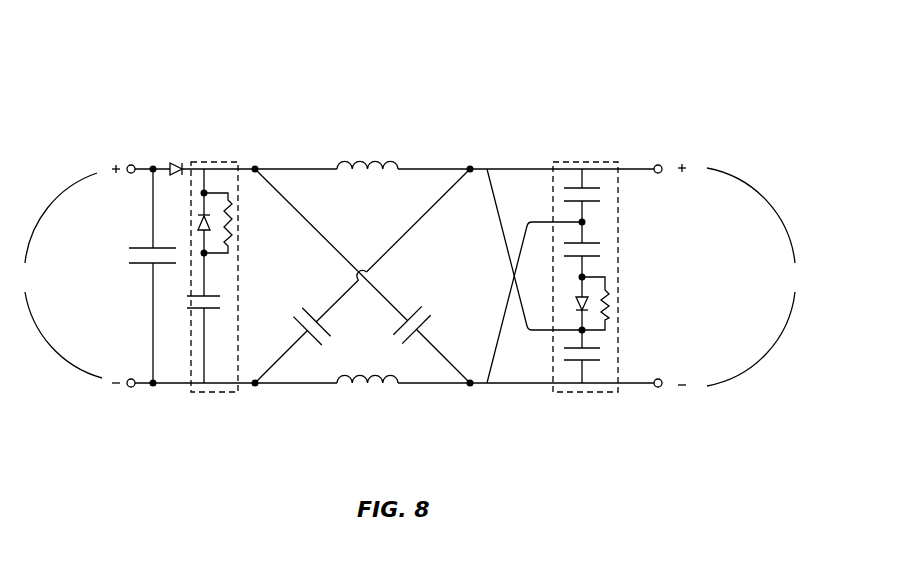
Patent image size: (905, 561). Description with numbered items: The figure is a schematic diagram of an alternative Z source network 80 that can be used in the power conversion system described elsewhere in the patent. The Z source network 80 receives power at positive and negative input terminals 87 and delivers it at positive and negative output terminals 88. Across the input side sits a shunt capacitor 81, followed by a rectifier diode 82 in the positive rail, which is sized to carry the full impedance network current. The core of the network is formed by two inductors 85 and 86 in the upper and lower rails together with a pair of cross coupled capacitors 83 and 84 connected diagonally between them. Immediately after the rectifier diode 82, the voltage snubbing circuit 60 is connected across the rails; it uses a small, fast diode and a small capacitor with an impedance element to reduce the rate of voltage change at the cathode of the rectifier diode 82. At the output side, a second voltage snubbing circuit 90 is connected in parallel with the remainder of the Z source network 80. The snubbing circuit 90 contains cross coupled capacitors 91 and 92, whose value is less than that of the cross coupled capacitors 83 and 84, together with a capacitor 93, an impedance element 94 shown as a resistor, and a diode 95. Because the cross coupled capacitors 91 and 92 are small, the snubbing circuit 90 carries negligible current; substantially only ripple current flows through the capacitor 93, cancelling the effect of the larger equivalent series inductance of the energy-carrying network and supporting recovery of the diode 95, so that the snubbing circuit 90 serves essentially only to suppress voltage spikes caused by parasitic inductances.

The Z source network 80 is at (578, 62).
The shunt capacitor 81 is at (143, 265).
The rectifier diode 82 is at (176, 158).
The voltage snubbing circuit 60 is at (222, 162).
The cross coupled capacitor 83 is at (291, 323).
The cross coupled capacitor 84 is at (436, 326).
The inductor 85 is at (378, 150).
The inductor 86 is at (372, 387).
The positive and negative input terminals 87 is at (57, 275).
The positive and negative output terminals 88 is at (754, 277).
The voltage snubbing circuit 90 is at (599, 297).
The cross coupled capacitor 91 is at (605, 196).
The cross coupled capacitor 92 is at (605, 353).
The capacitor 93 is at (605, 251).
The impedance element 94 is at (611, 303).
The diode 95 is at (534, 276).